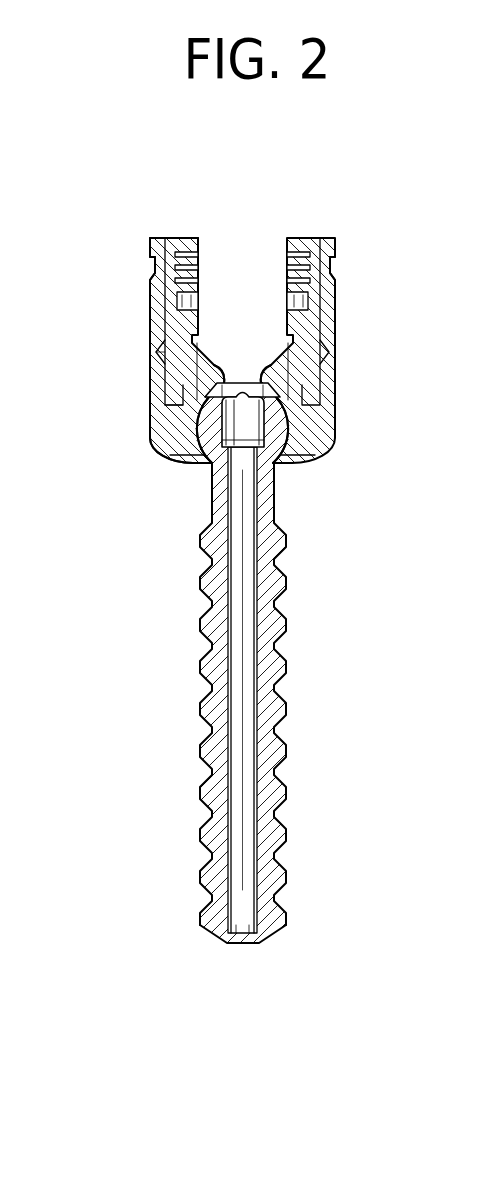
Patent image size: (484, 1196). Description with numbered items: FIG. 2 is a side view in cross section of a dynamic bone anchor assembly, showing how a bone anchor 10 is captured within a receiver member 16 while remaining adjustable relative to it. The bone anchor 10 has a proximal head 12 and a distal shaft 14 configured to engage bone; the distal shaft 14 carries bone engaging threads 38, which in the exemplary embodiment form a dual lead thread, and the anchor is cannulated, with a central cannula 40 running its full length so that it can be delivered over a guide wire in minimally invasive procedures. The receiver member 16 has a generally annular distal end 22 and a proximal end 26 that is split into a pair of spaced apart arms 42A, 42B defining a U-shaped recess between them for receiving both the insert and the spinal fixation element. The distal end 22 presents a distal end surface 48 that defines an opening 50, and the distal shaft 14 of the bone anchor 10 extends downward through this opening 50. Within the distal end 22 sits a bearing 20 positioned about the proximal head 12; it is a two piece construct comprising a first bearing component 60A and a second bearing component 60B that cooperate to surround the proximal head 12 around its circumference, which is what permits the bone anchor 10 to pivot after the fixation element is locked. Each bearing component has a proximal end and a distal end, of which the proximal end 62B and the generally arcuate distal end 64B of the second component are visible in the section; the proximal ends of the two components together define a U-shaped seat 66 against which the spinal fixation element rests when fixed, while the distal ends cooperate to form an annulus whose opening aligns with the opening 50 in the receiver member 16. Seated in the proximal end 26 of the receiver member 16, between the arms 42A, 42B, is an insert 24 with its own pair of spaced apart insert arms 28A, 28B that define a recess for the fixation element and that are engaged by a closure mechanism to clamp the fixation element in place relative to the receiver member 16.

The bone anchor 10 is at (180, 677).
The proximal head 12 is at (328, 456).
The distal shaft 14 is at (242, 694).
The receiver member 16 is at (150, 408).
The bearing 20 is at (336, 402).
The distal end 22 is at (150, 443).
The insert 24 is at (325, 322).
The proximal end 26 is at (152, 272).
The insert arm 28A is at (323, 297).
The insert arm 28B is at (167, 302).
The bone engaging thread 38 is at (284, 661).
The cannula 40 is at (243, 945).
The arm 42A is at (336, 272).
The arm 42B is at (150, 282).
The distal end surface 48 is at (185, 465).
The opening 50 is at (288, 465).
The first bearing component 60A is at (327, 356).
The second bearing component 60B is at (158, 356).
The proximal end 62B is at (165, 379).
The distal end 64B is at (172, 422).
The U-shaped seat 66 is at (215, 366).